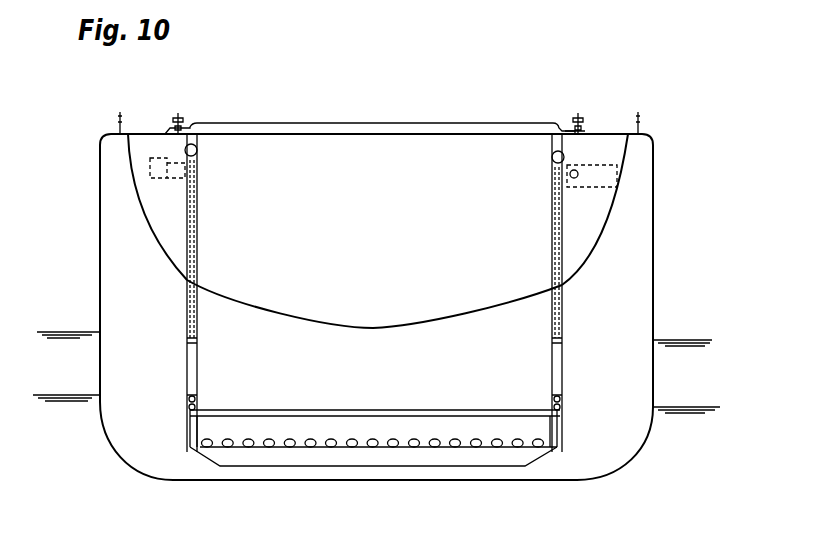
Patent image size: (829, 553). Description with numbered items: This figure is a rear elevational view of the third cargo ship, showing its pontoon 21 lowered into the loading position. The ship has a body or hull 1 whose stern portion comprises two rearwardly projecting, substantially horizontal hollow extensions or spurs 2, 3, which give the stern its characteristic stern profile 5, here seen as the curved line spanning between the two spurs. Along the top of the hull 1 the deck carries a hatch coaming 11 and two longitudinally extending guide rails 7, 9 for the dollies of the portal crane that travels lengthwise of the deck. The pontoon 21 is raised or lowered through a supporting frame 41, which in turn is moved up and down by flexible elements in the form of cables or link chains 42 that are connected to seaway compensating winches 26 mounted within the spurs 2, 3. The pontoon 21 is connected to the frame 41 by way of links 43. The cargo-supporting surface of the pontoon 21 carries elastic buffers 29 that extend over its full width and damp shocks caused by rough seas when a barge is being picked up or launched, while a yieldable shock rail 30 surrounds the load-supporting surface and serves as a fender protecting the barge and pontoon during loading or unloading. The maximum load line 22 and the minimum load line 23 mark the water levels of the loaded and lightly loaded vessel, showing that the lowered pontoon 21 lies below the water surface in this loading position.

The hull 1 is at (627, 448).
The spur 2 is at (137, 150).
The spur 3 is at (620, 160).
The stern profile 5 is at (282, 310).
The guide rail 7 is at (180, 116).
The guide rail 9 is at (581, 125).
The hatch coaming 11 is at (264, 131).
The pontoon 21 is at (338, 455).
The maximum load line 22 is at (52, 332).
The minimum load line 23 is at (698, 410).
The seaway compensating winch 26 is at (153, 167).
The buffer 29 is at (412, 440).
The shock rail 30 is at (262, 410).
The supporting frame 41 is at (198, 345).
The cables or link chains 42 is at (199, 218).
The link 43 is at (186, 404).